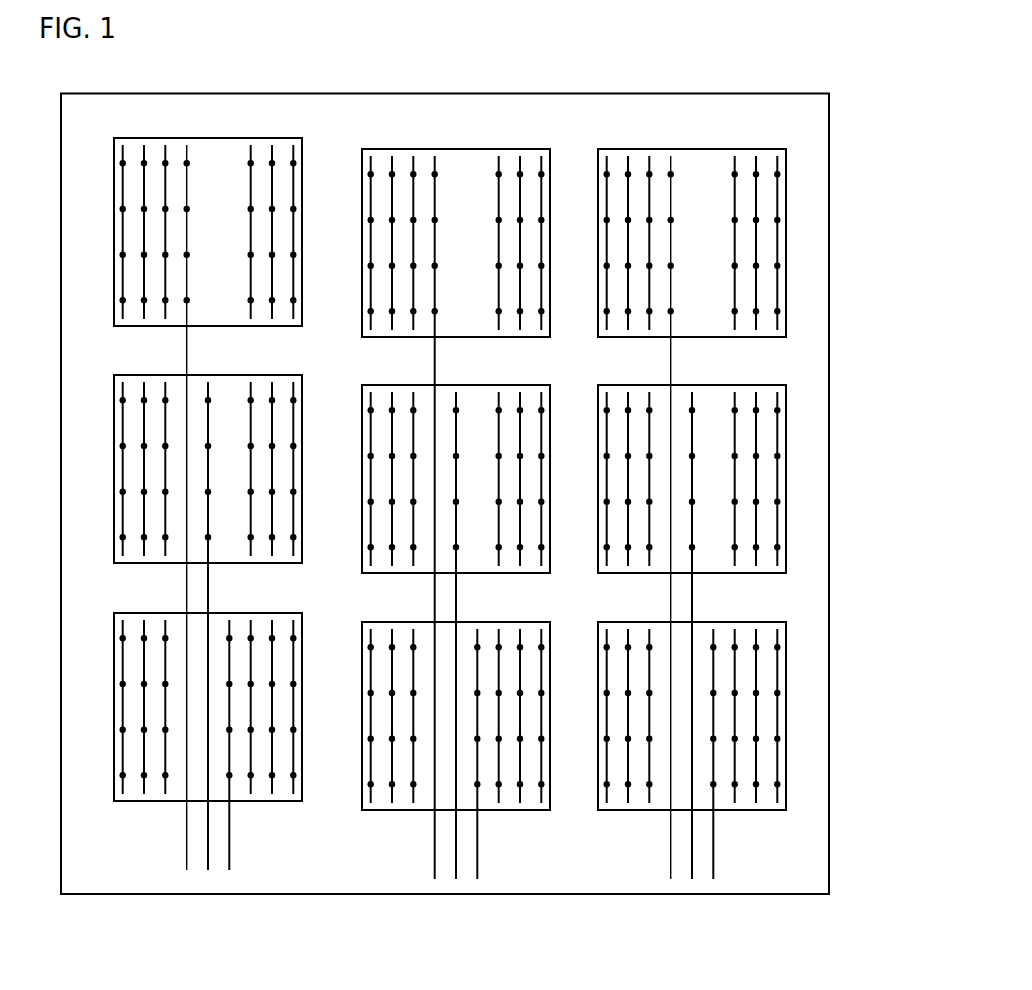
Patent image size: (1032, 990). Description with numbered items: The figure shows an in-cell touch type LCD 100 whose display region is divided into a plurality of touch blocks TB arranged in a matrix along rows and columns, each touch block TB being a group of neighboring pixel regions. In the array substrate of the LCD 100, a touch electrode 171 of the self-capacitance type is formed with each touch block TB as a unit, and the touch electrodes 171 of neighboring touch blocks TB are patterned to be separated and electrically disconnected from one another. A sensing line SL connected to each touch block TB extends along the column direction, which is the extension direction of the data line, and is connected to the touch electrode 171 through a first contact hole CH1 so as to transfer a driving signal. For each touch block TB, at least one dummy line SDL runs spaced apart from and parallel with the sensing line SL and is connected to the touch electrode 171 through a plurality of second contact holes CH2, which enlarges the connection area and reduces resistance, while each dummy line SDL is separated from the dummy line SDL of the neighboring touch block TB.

The LCD 100 is at (482, 956).
The touch electrode 171 is at (787, 230).
The touch block TB is at (755, 243).
The first contact hole CH1 is at (190, 156).
The second contact hole CH2 is at (162, 162).
The sensing line SL is at (227, 486).
The dummy line SDL is at (119, 753).